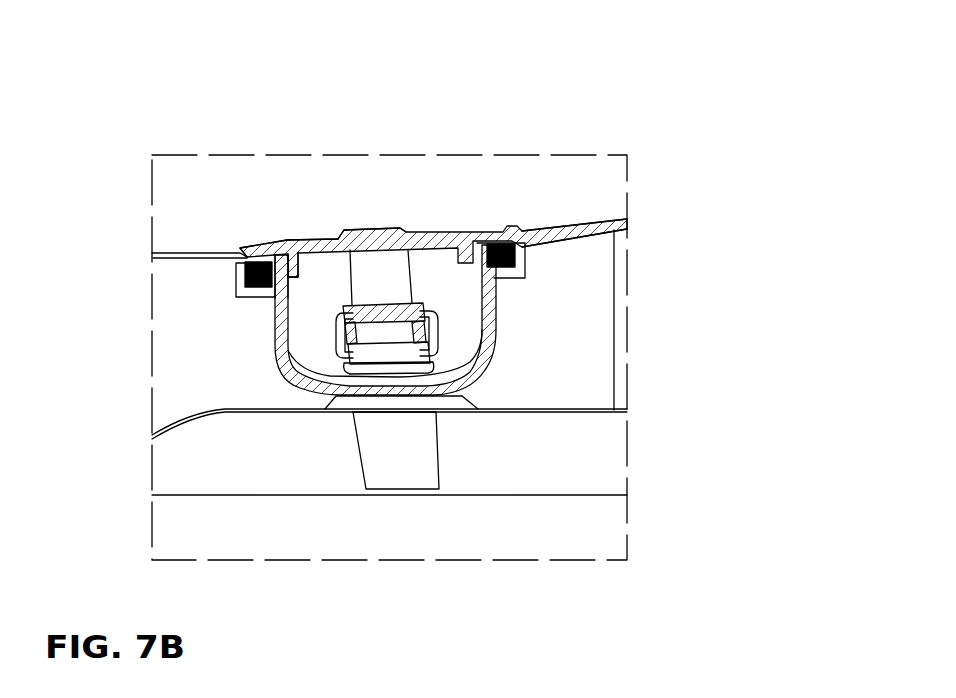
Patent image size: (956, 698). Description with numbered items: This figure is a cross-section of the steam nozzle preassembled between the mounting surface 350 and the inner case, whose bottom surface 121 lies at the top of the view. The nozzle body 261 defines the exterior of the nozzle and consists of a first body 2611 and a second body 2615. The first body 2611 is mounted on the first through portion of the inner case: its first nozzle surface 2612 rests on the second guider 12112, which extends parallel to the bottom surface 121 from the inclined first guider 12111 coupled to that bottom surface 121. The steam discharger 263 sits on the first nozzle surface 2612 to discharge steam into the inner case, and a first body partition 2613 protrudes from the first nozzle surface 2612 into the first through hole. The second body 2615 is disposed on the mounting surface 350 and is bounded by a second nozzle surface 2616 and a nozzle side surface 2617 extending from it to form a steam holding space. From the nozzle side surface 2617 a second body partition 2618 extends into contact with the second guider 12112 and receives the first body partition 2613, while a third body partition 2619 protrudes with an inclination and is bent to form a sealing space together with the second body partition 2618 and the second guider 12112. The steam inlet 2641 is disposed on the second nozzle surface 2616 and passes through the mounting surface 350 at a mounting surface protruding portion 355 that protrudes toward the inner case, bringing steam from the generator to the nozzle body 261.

The nozzle body 261 is at (550, 83).
The first body 2611 is at (458, 240).
The first nozzle surface 2612 is at (318, 240).
The first body partition 2613 is at (292, 242).
The steam discharger 263 is at (379, 228).
The second body 2615 is at (490, 340).
The bottom surface 121 is at (240, 250).
The first guider 12111 is at (170, 253).
The second guider 12112 is at (243, 269).
The third body partition 2619 is at (240, 283).
The second body partition 2618 is at (262, 297).
The nozzle side surface 2617 is at (291, 373).
The second nozzle surface 2616 is at (320, 388).
The steam inlet 2641 is at (407, 465).
The mounting surface protruding portion 355 is at (448, 403).
The mounting surface 350 is at (575, 409).